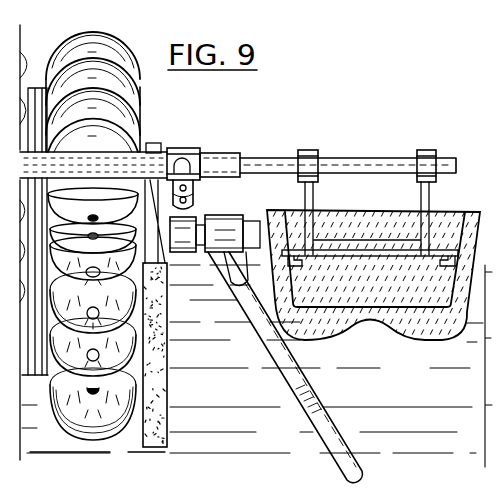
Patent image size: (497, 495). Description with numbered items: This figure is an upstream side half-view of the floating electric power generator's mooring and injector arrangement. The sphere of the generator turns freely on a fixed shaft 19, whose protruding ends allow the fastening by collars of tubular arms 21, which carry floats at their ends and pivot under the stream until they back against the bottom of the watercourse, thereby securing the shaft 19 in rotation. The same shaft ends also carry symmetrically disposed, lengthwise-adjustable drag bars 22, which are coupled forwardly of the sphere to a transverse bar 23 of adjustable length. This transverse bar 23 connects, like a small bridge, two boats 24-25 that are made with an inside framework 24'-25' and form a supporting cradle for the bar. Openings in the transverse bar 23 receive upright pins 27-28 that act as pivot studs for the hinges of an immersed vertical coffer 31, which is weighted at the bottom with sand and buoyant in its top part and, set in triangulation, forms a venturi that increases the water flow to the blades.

The fixed shaft 19 is at (214, 272).
The arms 21 is at (315, 393).
The drag bars 22 is at (228, 160).
The transverse bar 23 is at (241, 157).
The boats 24-25 is at (427, 328).
The inside framework 24'-25' is at (367, 188).
The upright pins 27-28 is at (151, 147).
The vertical coffer 31 is at (167, 402).